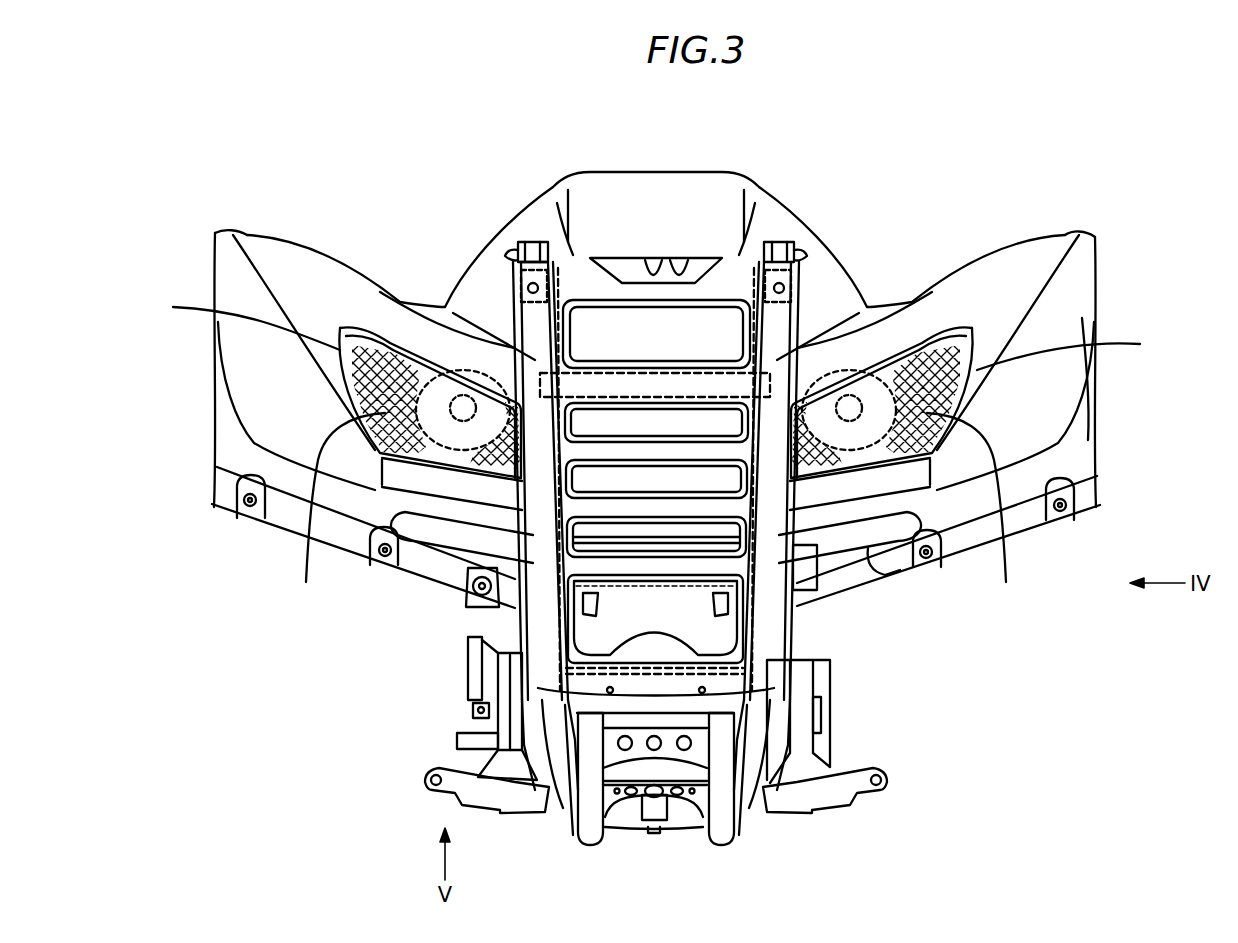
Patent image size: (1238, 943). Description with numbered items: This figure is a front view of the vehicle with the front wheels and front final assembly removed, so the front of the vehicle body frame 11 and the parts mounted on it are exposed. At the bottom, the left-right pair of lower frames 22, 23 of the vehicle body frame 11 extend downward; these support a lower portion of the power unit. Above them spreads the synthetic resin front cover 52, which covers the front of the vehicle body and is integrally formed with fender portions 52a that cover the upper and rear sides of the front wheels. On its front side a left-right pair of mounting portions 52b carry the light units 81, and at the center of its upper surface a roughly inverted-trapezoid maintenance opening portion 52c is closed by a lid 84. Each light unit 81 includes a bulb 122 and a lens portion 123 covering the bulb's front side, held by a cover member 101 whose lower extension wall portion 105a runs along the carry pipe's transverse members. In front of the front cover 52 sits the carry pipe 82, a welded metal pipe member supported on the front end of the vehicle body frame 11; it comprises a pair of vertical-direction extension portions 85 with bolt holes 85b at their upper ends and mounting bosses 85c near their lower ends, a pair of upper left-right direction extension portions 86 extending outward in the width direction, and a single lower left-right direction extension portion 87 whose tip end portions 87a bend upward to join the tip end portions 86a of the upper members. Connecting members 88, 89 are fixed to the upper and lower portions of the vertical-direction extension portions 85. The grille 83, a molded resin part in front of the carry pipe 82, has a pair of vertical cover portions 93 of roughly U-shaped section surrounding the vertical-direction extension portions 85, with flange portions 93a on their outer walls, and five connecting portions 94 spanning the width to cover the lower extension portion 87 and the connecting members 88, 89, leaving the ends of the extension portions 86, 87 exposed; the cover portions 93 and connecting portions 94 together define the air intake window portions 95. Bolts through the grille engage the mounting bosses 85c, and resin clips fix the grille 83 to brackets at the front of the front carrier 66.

The vehicle body frame 11 is at (738, 852).
The lower frame 22 is at (718, 840).
The lower frame 23 is at (590, 840).
The front cover 52 is at (1008, 265).
The fender portion 52a is at (262, 410).
The mounting portion 52b is at (335, 353).
The maintenance opening portion 52c is at (672, 425).
The front carrier 66 is at (522, 244).
The light unit 81 is at (412, 338).
The carry pipe 82 is at (888, 560).
The grille 83 is at (443, 307).
The lid 84 is at (613, 385).
The vertical-direction extension portion 85 is at (555, 707).
The bolt hole 85b is at (515, 285).
The mounting boss 85c is at (550, 645).
The left-right direction extension portion 86 is at (447, 483).
The tip end portion 86a is at (940, 465).
The left-right direction extension portion 87 is at (465, 540).
The tip end portion 87a is at (947, 508).
The connecting member 88 is at (630, 378).
The connecting member 89 is at (690, 703).
The cover portion 93 is at (390, 330).
The flange portion 93a is at (533, 600).
The connecting portion 94 is at (543, 244).
The air intake window portion 95 is at (713, 480).
The cover member 101 is at (358, 448).
The lower extension wall portion 105a is at (385, 488).
The bulb 122 is at (420, 372).
The lens portion 123 is at (320, 463).